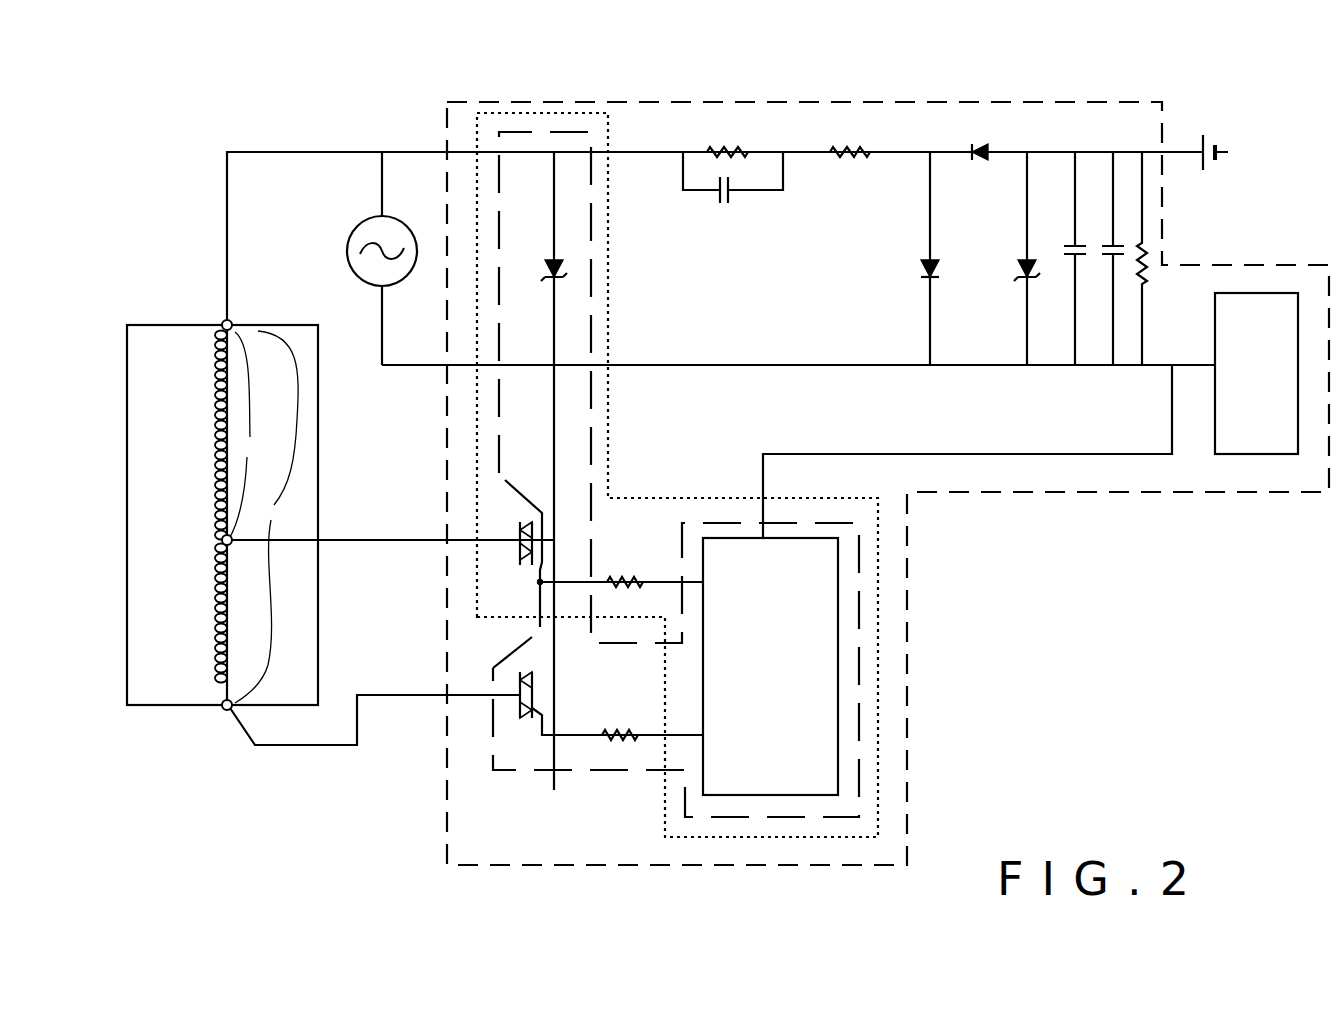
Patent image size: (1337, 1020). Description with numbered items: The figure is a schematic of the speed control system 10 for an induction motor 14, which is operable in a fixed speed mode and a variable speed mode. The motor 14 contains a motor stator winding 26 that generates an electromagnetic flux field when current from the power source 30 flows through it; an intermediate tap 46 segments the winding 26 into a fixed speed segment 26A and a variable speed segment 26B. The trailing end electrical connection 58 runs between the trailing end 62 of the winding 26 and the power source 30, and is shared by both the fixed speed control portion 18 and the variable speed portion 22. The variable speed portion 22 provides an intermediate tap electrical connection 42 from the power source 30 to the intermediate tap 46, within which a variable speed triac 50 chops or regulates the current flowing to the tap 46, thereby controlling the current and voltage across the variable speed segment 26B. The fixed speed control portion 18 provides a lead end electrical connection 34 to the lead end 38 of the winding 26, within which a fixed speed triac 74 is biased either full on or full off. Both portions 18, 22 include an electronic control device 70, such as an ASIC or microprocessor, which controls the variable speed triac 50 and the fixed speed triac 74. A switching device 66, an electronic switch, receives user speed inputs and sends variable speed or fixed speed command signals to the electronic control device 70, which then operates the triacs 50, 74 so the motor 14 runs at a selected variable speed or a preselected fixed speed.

The speed control system 10 is at (1055, 101).
The induction motor 14 is at (185, 708).
The fixed speed control portion 18 is at (557, 132).
The variable speed portion 22 is at (493, 112).
The motor stator winding 26 is at (215, 507).
The fixed speed segment 26A is at (274, 517).
The variable speed segment 26B is at (257, 435).
The power source 30 is at (357, 227).
The lead end electrical connection 34 is at (290, 745).
The lead end 38 is at (226, 711).
The intermediate tap electrical connection 42 is at (362, 540).
The intermediate tap 46 is at (224, 543).
The variable speed triac 50 is at (520, 530).
The trailing end electrical connection 58 is at (295, 152).
The trailing end 62 is at (224, 321).
The switching device 66 is at (1300, 345).
The electronic control device 70 is at (798, 576).
The fixed speed triac 74 is at (518, 707).